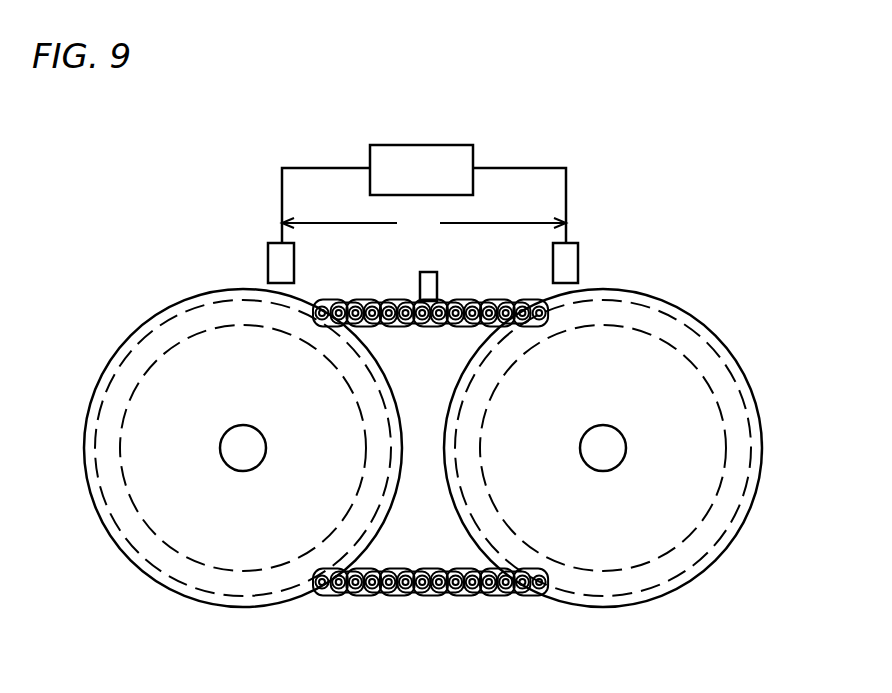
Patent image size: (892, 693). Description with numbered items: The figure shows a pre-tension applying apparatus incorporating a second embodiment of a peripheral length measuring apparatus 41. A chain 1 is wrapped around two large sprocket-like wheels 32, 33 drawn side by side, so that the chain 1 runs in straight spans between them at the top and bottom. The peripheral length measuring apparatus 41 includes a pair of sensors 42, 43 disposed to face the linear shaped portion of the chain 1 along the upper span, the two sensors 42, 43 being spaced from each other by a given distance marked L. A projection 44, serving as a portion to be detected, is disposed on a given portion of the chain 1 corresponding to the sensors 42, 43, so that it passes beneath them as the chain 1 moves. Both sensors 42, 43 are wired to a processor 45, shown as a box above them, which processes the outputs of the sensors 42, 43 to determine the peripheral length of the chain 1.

The chain 1 is at (425, 595).
The sprocket 32 is at (718, 336).
The sprocket 33 is at (125, 337).
The peripheral length measuring apparatus 41 is at (573, 160).
The sensor 42 is at (268, 262).
The sensor 43 is at (578, 262).
The projection 44 is at (440, 277).
The processor 45 is at (437, 145).